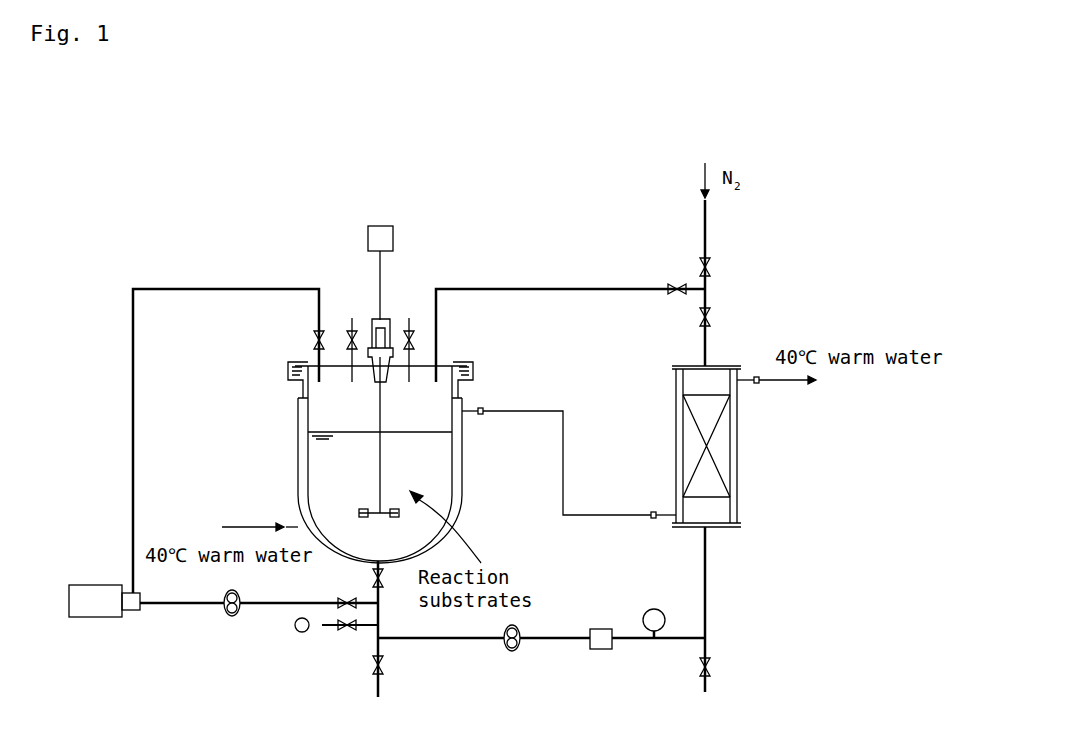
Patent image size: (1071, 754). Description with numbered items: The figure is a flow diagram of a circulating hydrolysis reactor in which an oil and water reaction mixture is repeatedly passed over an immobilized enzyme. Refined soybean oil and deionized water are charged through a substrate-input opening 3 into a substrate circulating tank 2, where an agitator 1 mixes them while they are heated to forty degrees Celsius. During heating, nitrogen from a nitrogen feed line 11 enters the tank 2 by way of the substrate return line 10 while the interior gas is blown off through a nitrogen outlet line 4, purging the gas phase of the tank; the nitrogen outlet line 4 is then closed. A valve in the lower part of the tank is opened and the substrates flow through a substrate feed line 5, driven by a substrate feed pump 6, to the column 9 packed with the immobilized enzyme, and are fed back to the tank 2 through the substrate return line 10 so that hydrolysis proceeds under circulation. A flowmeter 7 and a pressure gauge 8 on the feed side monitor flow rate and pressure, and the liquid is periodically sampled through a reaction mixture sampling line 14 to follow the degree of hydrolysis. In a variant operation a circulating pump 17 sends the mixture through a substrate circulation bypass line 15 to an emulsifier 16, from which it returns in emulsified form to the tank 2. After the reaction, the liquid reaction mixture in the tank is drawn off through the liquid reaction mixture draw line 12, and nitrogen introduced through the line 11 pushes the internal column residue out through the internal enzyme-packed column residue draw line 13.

The agitator 1 is at (393, 237).
The substrate circulating tank 2 is at (297, 477).
The substrate-input opening 3 is at (351, 318).
The nitrogen outlet line 4 is at (410, 318).
The substrate feed line 5 is at (430, 640).
The substrate feed pump 6 is at (512, 652).
The flowmeter 7 is at (603, 649).
The pressure gauge 8 is at (648, 610).
The column packed with an immobilized enzyme 9 is at (736, 458).
The substrate return line 10 is at (549, 289).
The nitrogen feed line 11 is at (706, 243).
The liquid reaction mixture draw line 12 is at (376, 684).
The internal enzyme-packed column residue draw line 13 is at (706, 680).
The reaction mixture sampling line 14 is at (322, 626).
The substrate circulation bypass line 15 is at (186, 604).
The emulsifier 16 is at (93, 618).
The circulating pump 17 is at (232, 617).